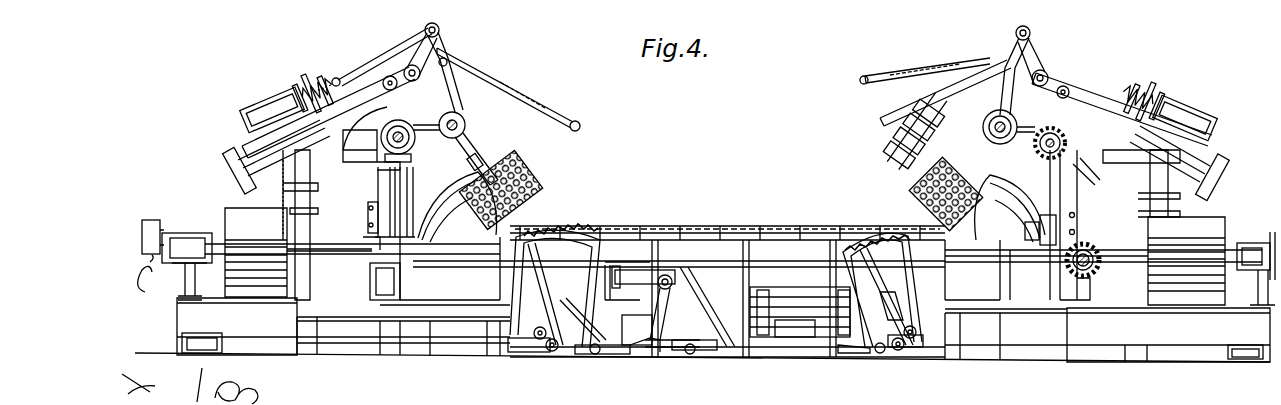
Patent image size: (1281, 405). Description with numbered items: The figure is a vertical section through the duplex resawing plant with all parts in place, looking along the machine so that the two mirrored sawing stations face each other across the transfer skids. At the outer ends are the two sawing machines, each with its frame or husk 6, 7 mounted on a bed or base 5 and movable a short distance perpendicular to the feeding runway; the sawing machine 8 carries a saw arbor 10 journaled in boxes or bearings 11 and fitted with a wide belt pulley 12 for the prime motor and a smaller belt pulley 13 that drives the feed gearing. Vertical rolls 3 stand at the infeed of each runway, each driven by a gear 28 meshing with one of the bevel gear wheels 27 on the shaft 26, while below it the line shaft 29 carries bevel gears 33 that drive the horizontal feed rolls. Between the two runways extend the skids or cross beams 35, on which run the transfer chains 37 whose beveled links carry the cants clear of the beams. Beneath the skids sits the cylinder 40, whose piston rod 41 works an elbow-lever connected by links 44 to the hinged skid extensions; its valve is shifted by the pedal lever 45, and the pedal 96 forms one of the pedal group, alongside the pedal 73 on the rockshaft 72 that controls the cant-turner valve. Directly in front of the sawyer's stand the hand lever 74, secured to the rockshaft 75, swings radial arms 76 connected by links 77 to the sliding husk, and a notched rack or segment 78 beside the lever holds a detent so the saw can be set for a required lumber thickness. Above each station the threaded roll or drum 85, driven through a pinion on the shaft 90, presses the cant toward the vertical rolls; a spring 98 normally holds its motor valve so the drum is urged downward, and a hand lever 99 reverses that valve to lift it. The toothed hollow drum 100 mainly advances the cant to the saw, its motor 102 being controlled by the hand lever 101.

The vertical rolls 3 is at (385, 183).
The bed or base 5 is at (1102, 352).
The frame or husk 6 is at (237, 326).
The frame or husk 7 is at (1200, 335).
The sawing machine 8 is at (414, 290).
The saw arbor 10 is at (331, 257).
The boxes or bearings 11 is at (197, 243).
The wide belt pulley 12 is at (725, 256).
The belt pulley 13 is at (158, 236).
The shaft 26 is at (405, 150).
The bevel gear wheels 27 is at (398, 134).
The gear 28 is at (390, 165).
The line shaft 29 is at (1097, 276).
The bevel gears 33 is at (1084, 283).
The skids or cross beams 35 is at (679, 254).
The transfer chains 37 is at (668, 228).
The cylinder 40 is at (637, 333).
The piston rod 41 is at (882, 309).
The links 44 is at (642, 285).
The lever 45 is at (673, 303).
The rockshaft 72 is at (560, 353).
The pedal or actuating lever 73 is at (840, 353).
The hand lever 74 is at (540, 295).
The rockshaft 75 is at (870, 353).
The radial arms 76 is at (540, 346).
The links 77 is at (522, 355).
The notched rack or segment 78 is at (602, 247).
The roll or drum 85 is at (893, 151).
The shaft 90 is at (462, 120).
The pedal 96 is at (588, 357).
The spring 98 is at (317, 95).
The hand lever 99 is at (482, 79).
The second roll or drum 100 is at (520, 168).
The hand lever 101 is at (958, 88).
The motor 102 is at (230, 157).